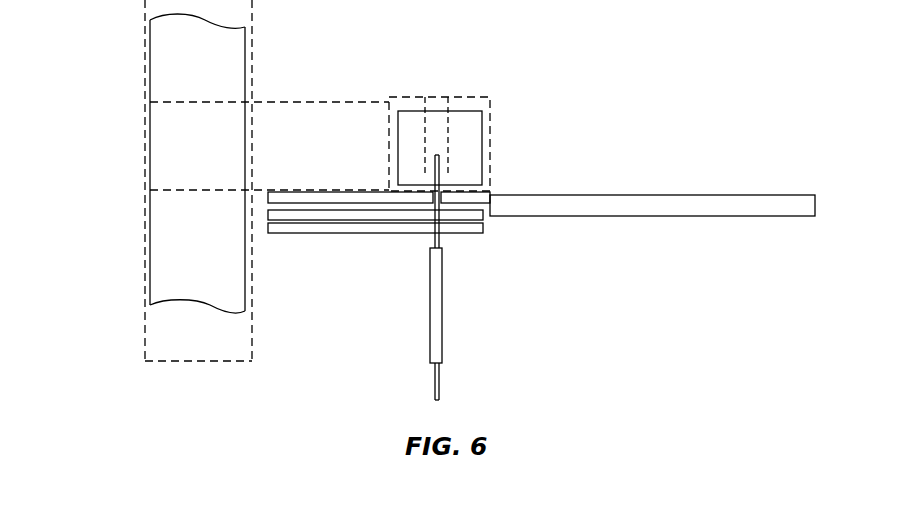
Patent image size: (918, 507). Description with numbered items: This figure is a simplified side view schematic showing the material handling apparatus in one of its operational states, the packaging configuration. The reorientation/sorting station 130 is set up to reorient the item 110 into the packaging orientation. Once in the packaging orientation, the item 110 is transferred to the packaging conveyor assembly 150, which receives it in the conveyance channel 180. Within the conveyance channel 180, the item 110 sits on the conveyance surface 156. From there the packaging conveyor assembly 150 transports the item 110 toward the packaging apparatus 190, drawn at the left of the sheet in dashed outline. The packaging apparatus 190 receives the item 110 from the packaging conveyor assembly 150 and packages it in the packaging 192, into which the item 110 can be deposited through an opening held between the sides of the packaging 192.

The item 110 is at (460, 128).
The reorientation/sorting station 130 is at (486, 144).
The packaging conveyor assembly 150 is at (385, 192).
The conveyance surface 156 is at (323, 190).
The conveyance channel 180 is at (390, 142).
The packaging apparatus 190 is at (145, 337).
The packaging 192 is at (147, 60).